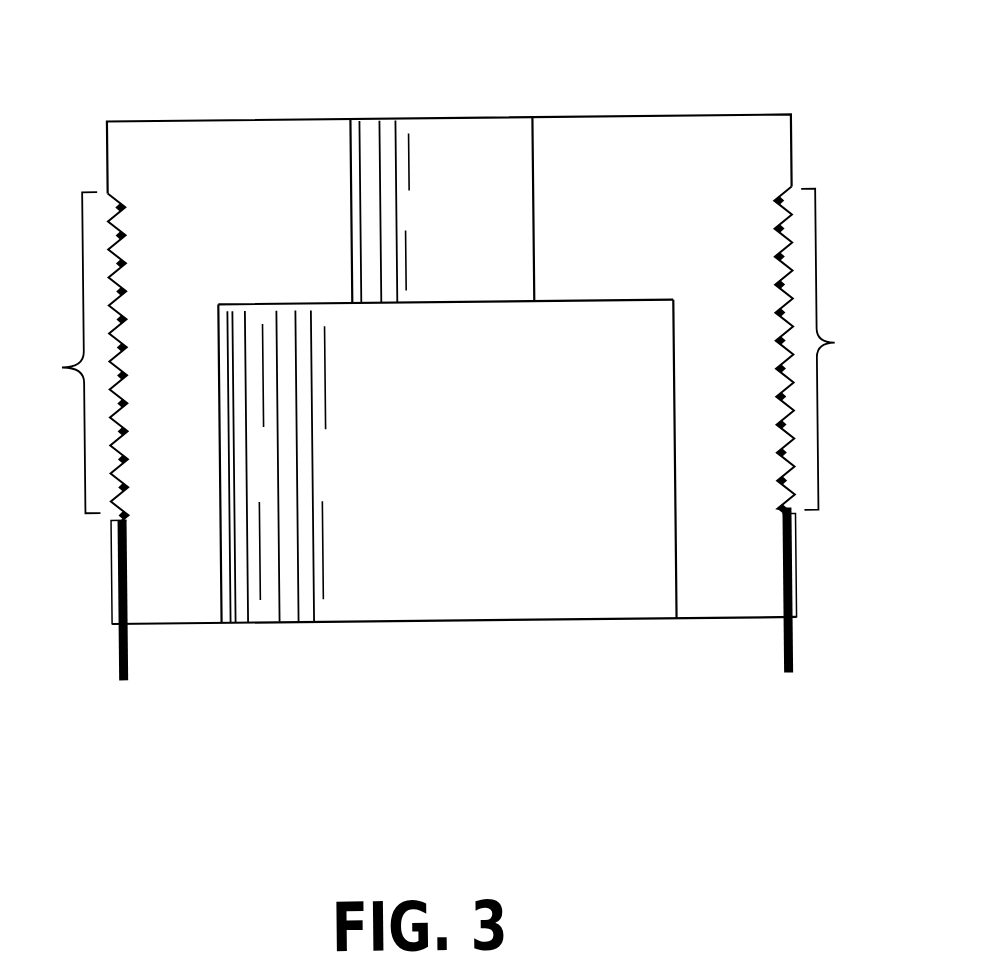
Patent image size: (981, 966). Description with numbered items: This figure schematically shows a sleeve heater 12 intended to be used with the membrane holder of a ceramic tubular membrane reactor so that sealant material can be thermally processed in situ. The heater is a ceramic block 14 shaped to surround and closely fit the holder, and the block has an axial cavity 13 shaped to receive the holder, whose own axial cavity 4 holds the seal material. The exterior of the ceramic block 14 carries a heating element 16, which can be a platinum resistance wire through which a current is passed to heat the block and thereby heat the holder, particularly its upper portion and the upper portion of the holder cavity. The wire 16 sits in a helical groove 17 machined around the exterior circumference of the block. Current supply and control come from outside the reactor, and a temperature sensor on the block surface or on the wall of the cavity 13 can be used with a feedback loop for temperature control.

The axial cavity 4 is at (471, 116).
The sleeve heater 12 is at (711, 622).
The axial cavity 13 is at (412, 579).
The ceramic block 14 is at (666, 146).
The heating element 16 is at (114, 666).
The helical groove 17 is at (448, 352).